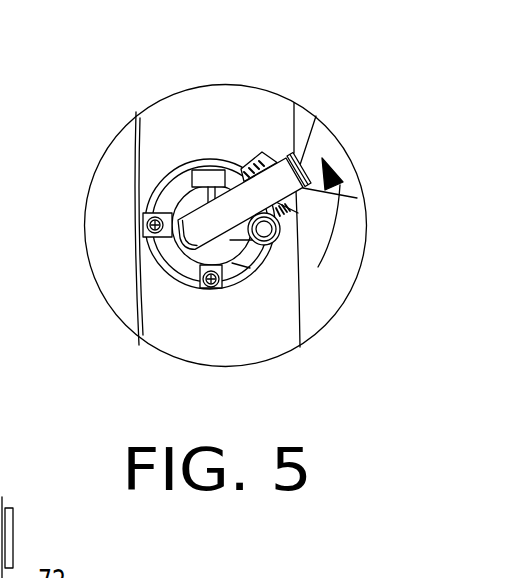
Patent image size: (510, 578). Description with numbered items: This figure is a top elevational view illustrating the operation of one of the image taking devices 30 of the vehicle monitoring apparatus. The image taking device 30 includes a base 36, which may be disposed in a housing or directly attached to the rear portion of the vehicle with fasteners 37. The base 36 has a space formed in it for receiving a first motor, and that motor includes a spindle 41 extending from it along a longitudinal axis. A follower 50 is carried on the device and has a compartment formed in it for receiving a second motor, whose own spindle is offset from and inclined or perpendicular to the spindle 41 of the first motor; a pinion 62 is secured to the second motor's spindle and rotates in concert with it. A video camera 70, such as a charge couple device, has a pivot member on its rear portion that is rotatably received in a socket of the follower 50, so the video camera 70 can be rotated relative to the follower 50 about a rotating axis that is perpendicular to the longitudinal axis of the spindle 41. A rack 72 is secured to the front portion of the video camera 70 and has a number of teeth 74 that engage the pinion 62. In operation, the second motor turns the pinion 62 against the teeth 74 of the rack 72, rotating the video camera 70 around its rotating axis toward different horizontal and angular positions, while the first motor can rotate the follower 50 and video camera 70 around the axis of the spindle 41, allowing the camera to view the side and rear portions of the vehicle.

The image taking device 30 is at (178, 285).
The base 36 is at (170, 187).
The fasteners 37 is at (148, 229).
The spindle 41 is at (208, 186).
The follower 50 is at (237, 243).
The pinion 62 is at (274, 238).
The video camera 70 is at (275, 170).
The rack 72 is at (288, 221).
The teeth 74 is at (283, 210).